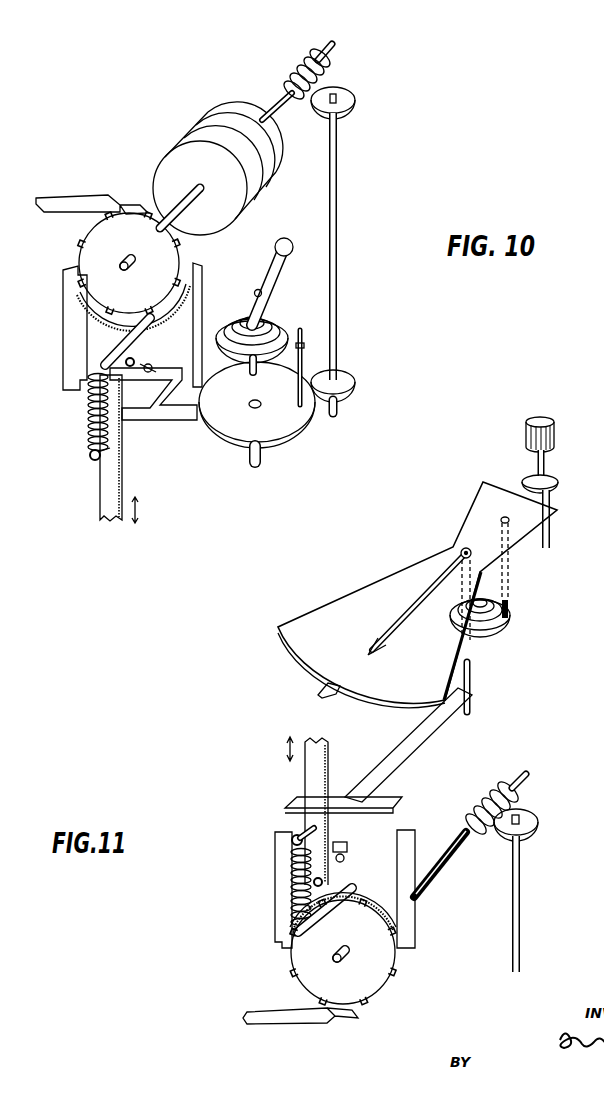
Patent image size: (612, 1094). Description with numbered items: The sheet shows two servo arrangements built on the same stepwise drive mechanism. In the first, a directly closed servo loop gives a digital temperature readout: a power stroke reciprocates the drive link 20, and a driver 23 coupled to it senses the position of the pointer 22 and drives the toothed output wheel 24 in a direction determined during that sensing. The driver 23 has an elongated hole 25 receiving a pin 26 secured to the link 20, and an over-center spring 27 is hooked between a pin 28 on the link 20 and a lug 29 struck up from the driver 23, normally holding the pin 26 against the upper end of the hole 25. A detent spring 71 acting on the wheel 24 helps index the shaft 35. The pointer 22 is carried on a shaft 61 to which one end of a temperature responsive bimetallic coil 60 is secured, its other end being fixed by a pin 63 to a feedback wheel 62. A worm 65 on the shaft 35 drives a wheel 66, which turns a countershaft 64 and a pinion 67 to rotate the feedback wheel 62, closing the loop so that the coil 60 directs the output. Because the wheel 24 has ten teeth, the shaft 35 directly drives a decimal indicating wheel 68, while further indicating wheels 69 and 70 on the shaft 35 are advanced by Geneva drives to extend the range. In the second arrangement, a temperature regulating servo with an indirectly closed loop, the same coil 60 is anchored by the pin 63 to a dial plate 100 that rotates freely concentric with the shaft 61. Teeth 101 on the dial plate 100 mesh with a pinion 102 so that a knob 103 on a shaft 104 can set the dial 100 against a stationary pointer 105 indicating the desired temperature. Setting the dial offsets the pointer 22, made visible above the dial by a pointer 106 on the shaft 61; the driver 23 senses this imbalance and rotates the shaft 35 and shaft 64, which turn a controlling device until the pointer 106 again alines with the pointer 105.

In FIG. 10, the link 20 is at (100, 507).
In FIG. 11, the link 20 is at (305, 770).
In FIG. 10, the pointer 22 is at (168, 428).
In FIG. 11, the pointer 22 is at (413, 746).
In FIG. 10, the driver 23 is at (62, 351).
In FIG. 11, the driver 23 is at (415, 913).
In FIG. 10, the toothed wheel 24 is at (80, 250).
In FIG. 11, the toothed wheel 24 is at (372, 992).
In FIG. 10, the elongated hole 25 is at (151, 366).
In FIG. 11, the elongated hole 25 is at (345, 842).
In FIG. 10, the pin 26 is at (135, 359).
In FIG. 11, the pin 26 is at (337, 867).
In FIG. 10, the over-center spring 27 is at (88, 433).
In FIG. 11, the over-center spring 27 is at (303, 890).
In FIG. 10, the pin 28 is at (89, 457).
In FIG. 11, the pin 28 is at (292, 838).
In FIG. 10, the lug 29 is at (104, 341).
In FIG. 10, the shaft 35 is at (190, 198).
In FIG. 11, the shaft 35 is at (438, 875).
In FIG. 10, the bimetallic coil 60 is at (283, 326).
In FIG. 11, the bimetallic coil 60 is at (505, 646).
In FIG. 10, the shaft 61 is at (263, 300).
In FIG. 11, the shaft 61 is at (476, 706).
In FIG. 10, the feedback wheel 62 is at (308, 432).
In FIG. 10, the pin 63 is at (297, 393).
In FIG. 11, the pin 63 is at (511, 578).
In FIG. 10, the countershaft 64 is at (338, 212).
In FIG. 11, the countershaft 64 is at (523, 893).
In FIG. 10, the worm 65 is at (297, 70).
In FIG. 11, the worm 65 is at (524, 798).
In FIG. 10, the wheel 66 is at (356, 103).
In FIG. 11, the wheel 66 is at (540, 832).
In FIG. 10, the pinion 67 is at (357, 387).
In FIG. 10, the decimal indicating wheel 68 is at (226, 105).
In FIG. 10, the indicating wheel 69 is at (200, 125).
In FIG. 10, the indicating wheel 70 is at (182, 143).
In FIG. 10, the detent spring 71 is at (82, 197).
In FIG. 11, the detent spring 71 is at (273, 1023).
In FIG. 11, the dial plate 100 is at (340, 597).
In FIG. 11, the teeth 101 is at (560, 512).
In FIG. 11, the pinion 102 is at (559, 483).
In FIG. 11, the knob 103 is at (556, 436).
In FIG. 11, the shaft 104 is at (548, 462).
In FIG. 11, the stationary pointer 105 is at (318, 693).
In FIG. 11, the pointer 106 is at (406, 613).